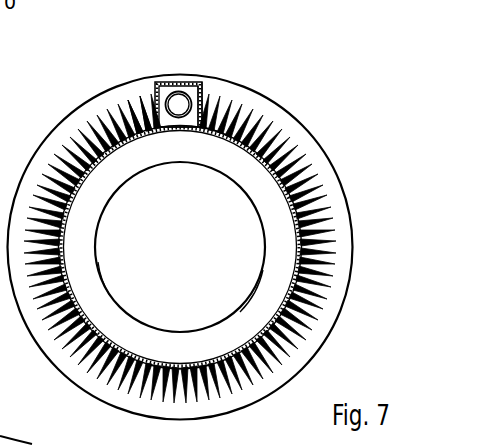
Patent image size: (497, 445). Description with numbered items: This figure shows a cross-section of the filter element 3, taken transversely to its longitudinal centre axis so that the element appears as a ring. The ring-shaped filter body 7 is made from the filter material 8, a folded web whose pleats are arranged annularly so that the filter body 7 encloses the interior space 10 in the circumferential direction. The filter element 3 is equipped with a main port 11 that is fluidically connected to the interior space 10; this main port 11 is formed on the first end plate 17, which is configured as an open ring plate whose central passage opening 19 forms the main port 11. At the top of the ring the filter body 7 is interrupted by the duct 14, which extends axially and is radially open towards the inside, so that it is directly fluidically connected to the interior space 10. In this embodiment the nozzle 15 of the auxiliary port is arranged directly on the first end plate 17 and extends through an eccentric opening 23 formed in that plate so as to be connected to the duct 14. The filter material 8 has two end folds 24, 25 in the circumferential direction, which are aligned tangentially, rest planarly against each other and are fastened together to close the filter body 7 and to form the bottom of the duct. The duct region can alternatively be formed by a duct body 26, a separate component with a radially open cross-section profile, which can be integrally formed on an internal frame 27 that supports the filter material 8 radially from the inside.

The filter element 3 is at (200, 210).
The filter body 7 is at (322, 152).
The filter material 8 is at (338, 173).
The interior space 10 is at (188, 256).
The main port 11 is at (104, 282).
The duct 14 is at (189, 128).
The nozzle 15 is at (163, 90).
The first end plate 17 is at (298, 117).
The central passage opening 19 is at (248, 297).
The eccentric opening 23 is at (182, 91).
The end fold 24 is at (150, 100).
The end fold 25 is at (203, 98).
The duct body 26 is at (199, 90).
The internal frame 27 is at (176, 364).